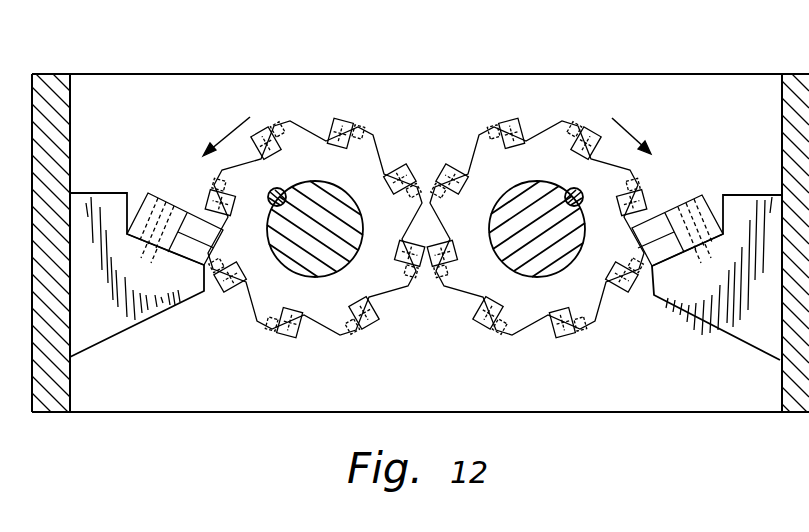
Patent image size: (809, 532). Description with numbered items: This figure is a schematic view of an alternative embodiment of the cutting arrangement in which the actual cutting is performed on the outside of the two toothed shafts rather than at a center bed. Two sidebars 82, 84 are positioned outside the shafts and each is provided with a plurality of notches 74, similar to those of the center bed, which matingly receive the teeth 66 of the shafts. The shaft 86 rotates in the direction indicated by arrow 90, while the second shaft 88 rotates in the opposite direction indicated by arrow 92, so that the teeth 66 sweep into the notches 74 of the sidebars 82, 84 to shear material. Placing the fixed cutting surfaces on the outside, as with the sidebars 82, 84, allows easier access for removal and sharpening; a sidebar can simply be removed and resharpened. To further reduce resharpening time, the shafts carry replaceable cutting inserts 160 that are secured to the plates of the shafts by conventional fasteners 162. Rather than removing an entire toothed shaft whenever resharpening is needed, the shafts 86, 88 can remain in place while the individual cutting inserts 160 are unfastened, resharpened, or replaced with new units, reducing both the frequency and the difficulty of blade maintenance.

The teeth 66 is at (277, 122).
The conventional fastener 162 is at (340, 126).
The replaceable cutting insert 160 is at (350, 126).
The notches 74 is at (200, 263).
The sidebar 82 is at (170, 203).
The sidebar 84 is at (665, 210).
The shaft 86 is at (319, 249).
The second shaft 88 is at (518, 243).
The arrow 90 is at (236, 130).
The arrow 92 is at (629, 127).